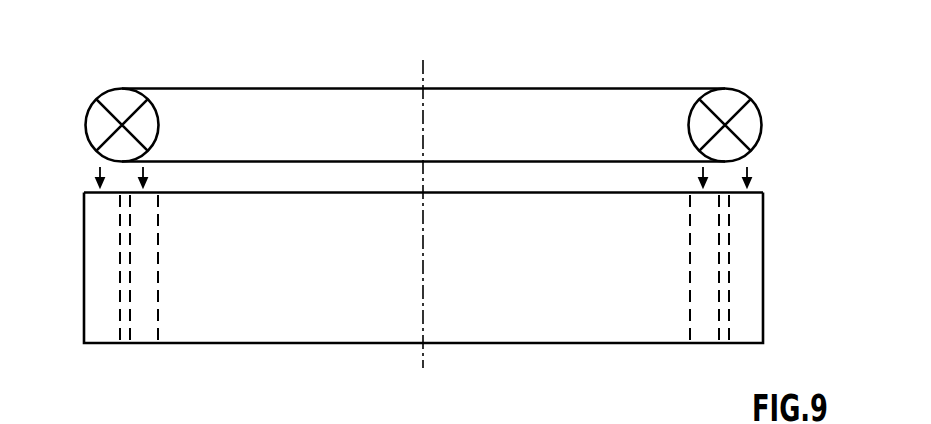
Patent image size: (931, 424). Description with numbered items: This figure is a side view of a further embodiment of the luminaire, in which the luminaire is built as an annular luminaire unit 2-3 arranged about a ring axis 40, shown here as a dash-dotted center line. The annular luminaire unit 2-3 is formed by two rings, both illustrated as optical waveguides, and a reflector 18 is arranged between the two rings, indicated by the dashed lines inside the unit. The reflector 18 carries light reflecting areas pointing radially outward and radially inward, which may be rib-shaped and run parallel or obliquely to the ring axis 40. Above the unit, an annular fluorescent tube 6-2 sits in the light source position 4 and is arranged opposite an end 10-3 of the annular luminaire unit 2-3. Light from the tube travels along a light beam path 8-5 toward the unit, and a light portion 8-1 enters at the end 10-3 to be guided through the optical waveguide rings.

The light source position 4 is at (850, 122).
The annular fluorescent tube 6-2 is at (742, 90).
The light portion 8-1 is at (100, 168).
The light beam path 8-5 is at (150, 168).
The end of the annular luminaire unit 10-3 is at (758, 191).
The reflector 18 is at (723, 245).
The annular luminaire unit 2-3 is at (824, 298).
The ring axis 40 is at (423, 84).